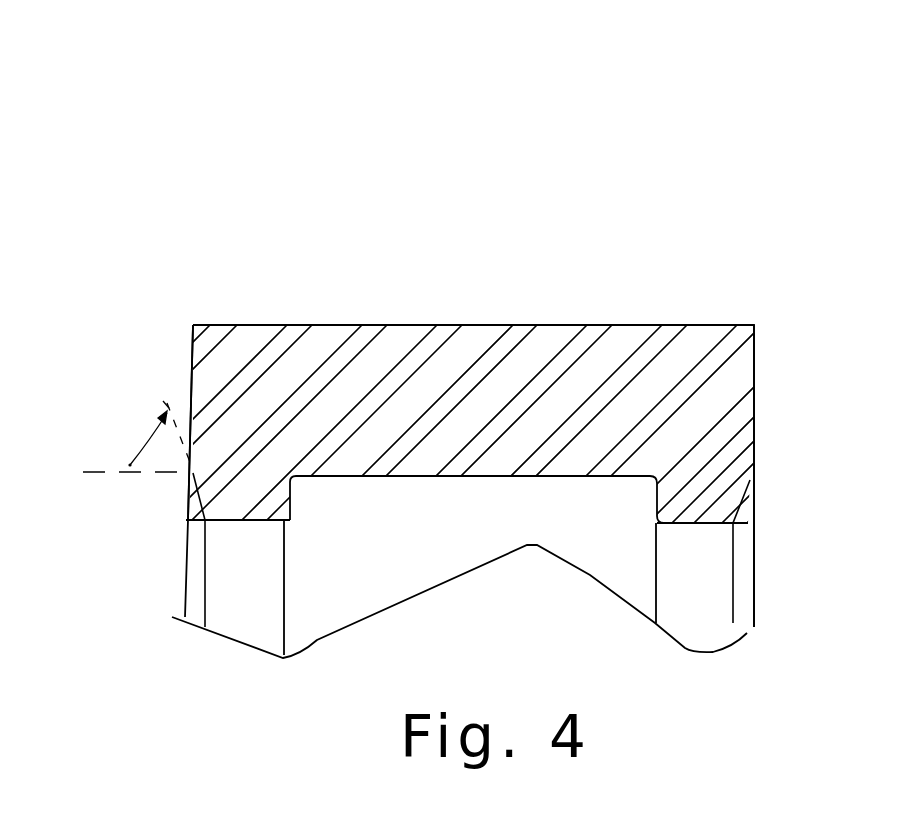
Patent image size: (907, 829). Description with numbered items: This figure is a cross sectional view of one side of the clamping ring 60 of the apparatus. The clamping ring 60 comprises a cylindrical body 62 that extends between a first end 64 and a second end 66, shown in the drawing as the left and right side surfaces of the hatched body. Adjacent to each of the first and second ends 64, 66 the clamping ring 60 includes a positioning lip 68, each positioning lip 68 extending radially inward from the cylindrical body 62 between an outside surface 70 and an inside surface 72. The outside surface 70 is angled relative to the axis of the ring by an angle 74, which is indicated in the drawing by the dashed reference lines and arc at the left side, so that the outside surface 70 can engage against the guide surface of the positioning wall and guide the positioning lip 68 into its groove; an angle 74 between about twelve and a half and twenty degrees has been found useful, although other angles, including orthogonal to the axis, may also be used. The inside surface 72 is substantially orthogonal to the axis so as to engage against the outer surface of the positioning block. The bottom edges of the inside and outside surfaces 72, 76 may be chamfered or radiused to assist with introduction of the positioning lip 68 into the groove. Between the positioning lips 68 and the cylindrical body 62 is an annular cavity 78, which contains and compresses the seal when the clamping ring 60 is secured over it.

The clamping ring 60 is at (523, 128).
The cylindrical body 62 is at (510, 380).
The first end 64 is at (193, 390).
The second end 66 is at (755, 372).
The positioning lip 68 is at (703, 497).
The outside surface 70 is at (255, 470).
The inside surface 72 is at (292, 478).
The angle 74 is at (140, 440).
The outside surface 76 is at (745, 503).
The annular cavity 78 is at (602, 508).